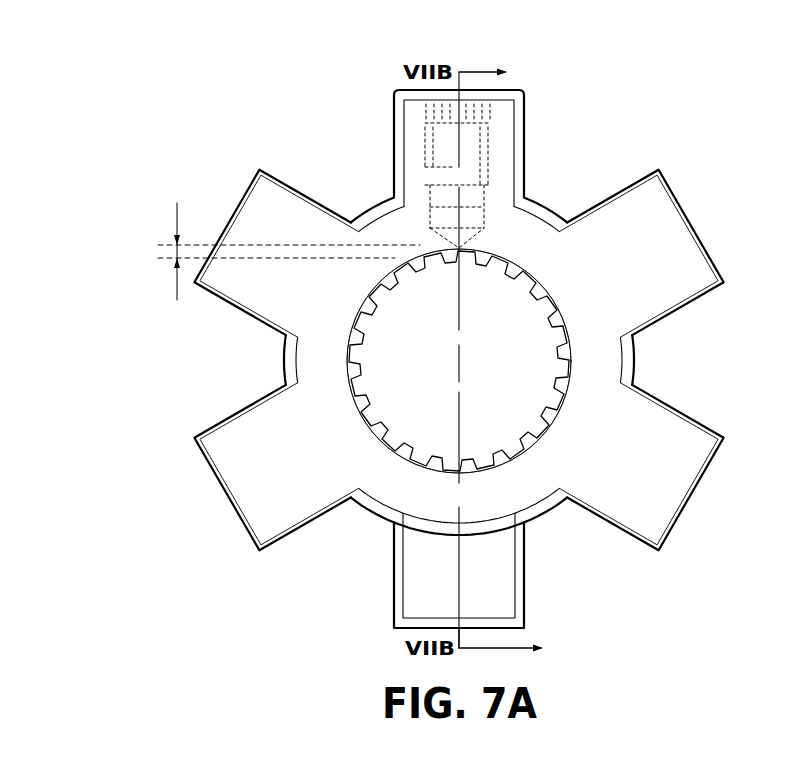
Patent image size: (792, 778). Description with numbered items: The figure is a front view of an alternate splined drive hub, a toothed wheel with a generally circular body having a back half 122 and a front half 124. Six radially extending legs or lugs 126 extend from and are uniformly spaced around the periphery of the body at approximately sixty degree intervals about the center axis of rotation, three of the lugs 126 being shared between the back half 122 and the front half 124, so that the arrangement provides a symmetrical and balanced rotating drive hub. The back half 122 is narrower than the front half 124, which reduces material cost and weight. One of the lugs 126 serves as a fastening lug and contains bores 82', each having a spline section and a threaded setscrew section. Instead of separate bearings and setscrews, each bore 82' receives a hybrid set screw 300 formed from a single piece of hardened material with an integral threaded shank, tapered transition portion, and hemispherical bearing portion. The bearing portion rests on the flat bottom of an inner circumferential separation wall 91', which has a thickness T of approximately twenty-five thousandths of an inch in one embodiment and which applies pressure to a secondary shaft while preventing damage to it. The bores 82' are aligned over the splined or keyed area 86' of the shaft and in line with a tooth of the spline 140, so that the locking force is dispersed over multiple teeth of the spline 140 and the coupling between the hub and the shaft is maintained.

The back half 122 is at (670, 282).
The front half 124 is at (290, 500).
The lugs 126 is at (241, 183).
The bores 82' is at (428, 148).
The hybrid set screw 300 is at (467, 160).
The separation wall 91' is at (466, 289).
The splined or keyed area 86' is at (394, 361).
The spline 140 is at (512, 437).
The thickness of the wall T is at (165, 250).